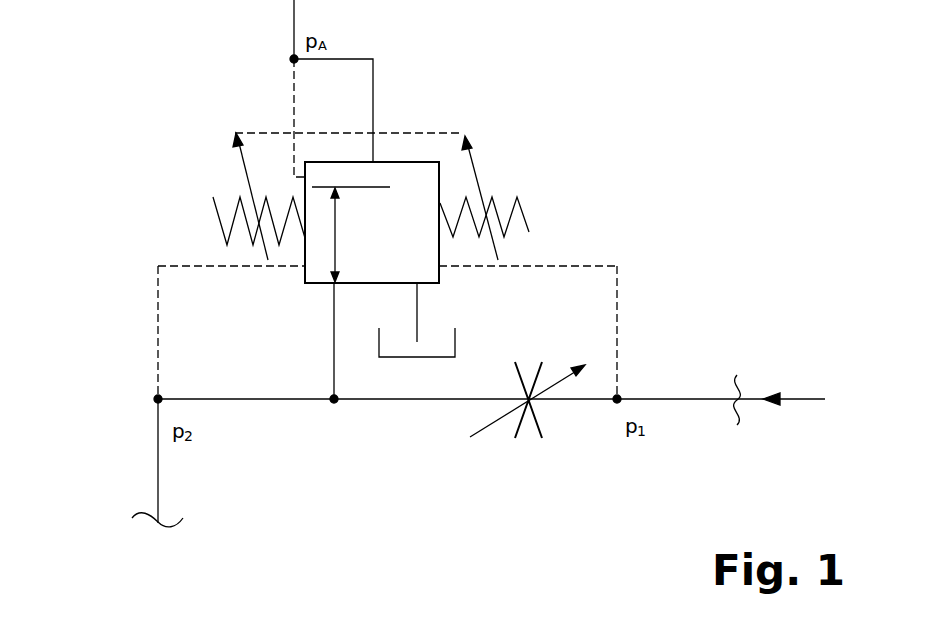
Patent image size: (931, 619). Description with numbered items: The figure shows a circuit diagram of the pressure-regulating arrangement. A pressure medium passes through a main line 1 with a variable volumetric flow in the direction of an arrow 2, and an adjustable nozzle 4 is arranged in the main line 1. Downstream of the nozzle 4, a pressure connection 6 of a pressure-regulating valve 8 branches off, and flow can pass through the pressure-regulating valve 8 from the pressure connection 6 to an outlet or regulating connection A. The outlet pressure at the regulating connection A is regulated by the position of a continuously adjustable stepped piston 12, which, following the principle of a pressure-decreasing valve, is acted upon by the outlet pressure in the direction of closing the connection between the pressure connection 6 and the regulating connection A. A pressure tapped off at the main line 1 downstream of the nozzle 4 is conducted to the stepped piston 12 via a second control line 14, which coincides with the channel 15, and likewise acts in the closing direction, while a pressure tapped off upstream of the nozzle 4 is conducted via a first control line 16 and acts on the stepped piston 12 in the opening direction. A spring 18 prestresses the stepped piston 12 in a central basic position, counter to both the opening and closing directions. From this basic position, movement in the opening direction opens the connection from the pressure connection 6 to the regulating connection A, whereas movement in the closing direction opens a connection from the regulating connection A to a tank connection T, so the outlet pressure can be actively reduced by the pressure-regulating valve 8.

The main line 1 is at (230, 402).
The arrow 2 is at (797, 399).
The adjustable nozzle 4 is at (503, 441).
The pressure connection 6 is at (334, 402).
The pressure-regulating valve 8 is at (572, 116).
The stepped piston 12 is at (392, 244).
The second control line 14 is at (157, 305).
The channel 15 is at (333, 357).
The first control line 16 is at (618, 305).
The spring 18 is at (214, 219).
The regulating connection A is at (292, 59).
The tank connection T is at (417, 287).